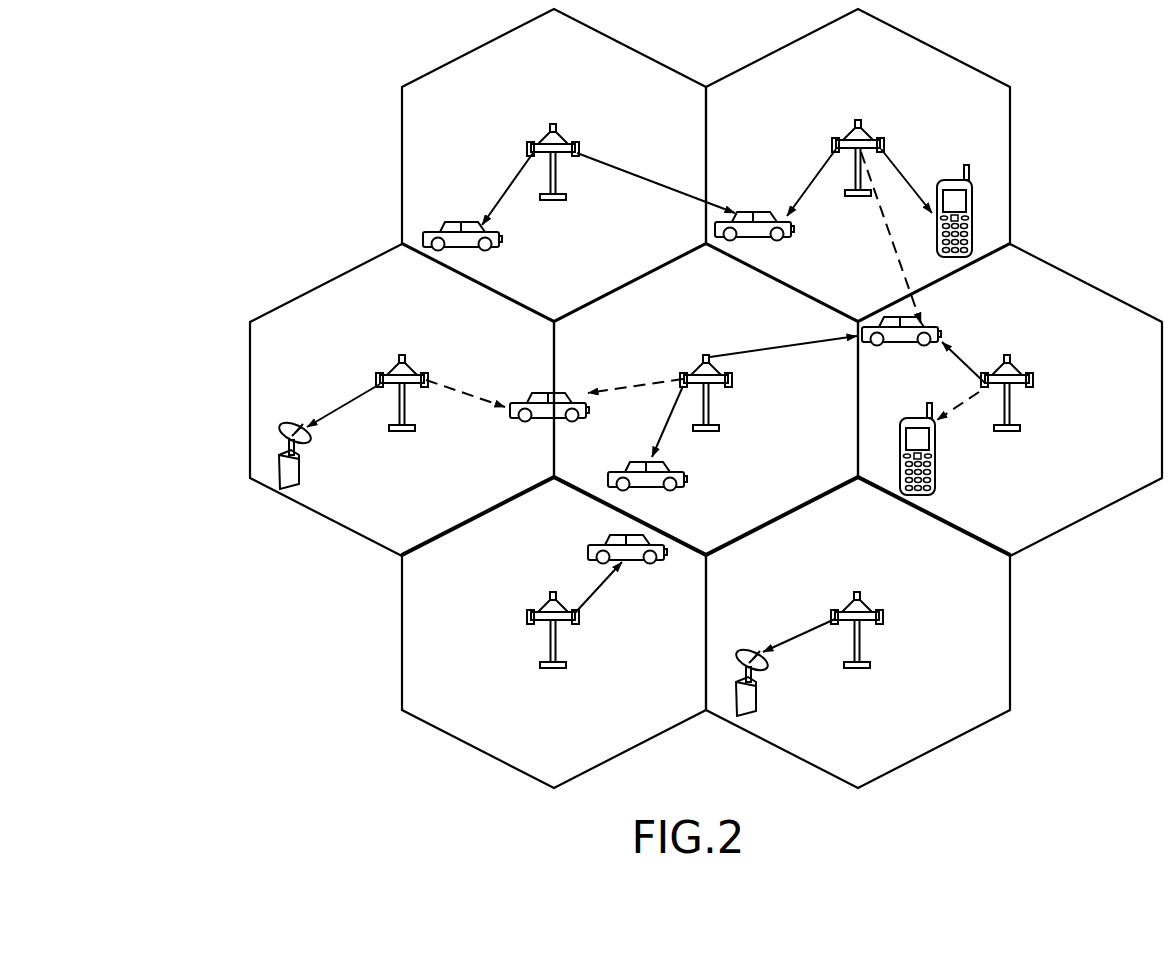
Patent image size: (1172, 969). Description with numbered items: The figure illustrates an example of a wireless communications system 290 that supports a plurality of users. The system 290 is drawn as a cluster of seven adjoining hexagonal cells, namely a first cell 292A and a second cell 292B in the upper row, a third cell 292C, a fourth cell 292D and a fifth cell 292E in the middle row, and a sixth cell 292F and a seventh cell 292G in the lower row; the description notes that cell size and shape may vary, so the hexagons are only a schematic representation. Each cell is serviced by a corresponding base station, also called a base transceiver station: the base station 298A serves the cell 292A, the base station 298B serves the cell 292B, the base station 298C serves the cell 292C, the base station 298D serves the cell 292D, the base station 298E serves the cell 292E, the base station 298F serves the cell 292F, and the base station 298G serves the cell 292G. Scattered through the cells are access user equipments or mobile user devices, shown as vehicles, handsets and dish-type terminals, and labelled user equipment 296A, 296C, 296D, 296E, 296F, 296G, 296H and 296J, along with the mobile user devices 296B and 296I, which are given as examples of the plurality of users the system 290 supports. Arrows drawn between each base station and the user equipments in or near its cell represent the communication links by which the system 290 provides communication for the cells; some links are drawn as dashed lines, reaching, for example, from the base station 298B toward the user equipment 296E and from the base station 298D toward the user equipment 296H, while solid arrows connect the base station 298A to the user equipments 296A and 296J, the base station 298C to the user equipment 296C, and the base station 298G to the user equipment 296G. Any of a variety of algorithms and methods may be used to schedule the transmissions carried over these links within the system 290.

The wireless communications system 290 is at (185, 98).
The cell 292A is at (529, 52).
The cell 292B is at (834, 52).
The cell 292C is at (378, 295).
The cell 292D is at (679, 296).
The cell 292E is at (986, 295).
The cell 292F is at (530, 525).
The cell 292G is at (834, 525).
The base station 298A is at (553, 124).
The base station 298B is at (858, 120).
The base station 298C is at (402, 355).
The base station 298D is at (706, 355).
The base station 298E is at (1007, 355).
The base station 298F is at (553, 592).
The base station 298G is at (857, 592).
The user equipment 296A is at (500, 243).
The mobile user device 296B is at (952, 179).
The user equipment 296C is at (300, 472).
The user equipment 296D is at (685, 480).
The user equipment 296E is at (898, 345).
The user equipment 296F is at (664, 560).
The user equipment 296G is at (757, 697).
The user equipment 296H is at (516, 420).
The mobile user device 296I is at (937, 478).
The user equipment 296J is at (757, 212).